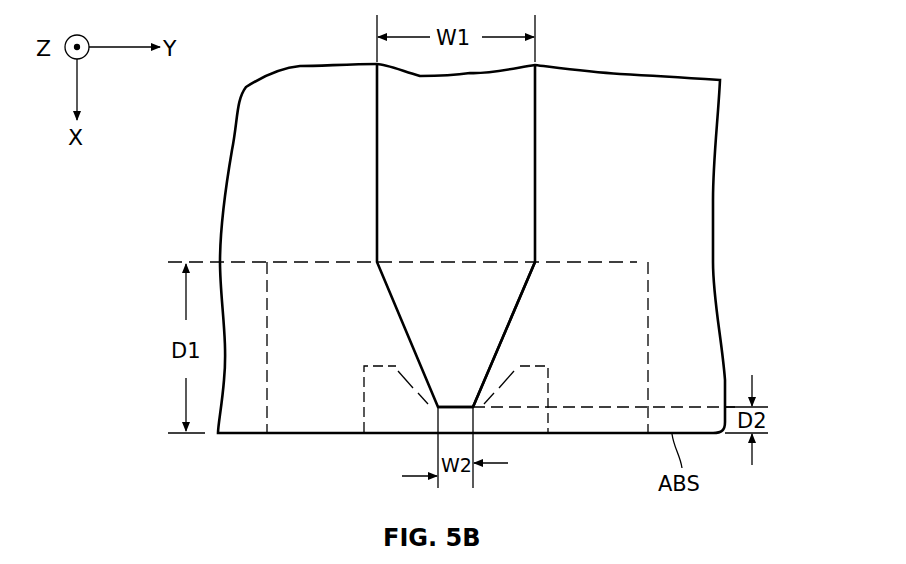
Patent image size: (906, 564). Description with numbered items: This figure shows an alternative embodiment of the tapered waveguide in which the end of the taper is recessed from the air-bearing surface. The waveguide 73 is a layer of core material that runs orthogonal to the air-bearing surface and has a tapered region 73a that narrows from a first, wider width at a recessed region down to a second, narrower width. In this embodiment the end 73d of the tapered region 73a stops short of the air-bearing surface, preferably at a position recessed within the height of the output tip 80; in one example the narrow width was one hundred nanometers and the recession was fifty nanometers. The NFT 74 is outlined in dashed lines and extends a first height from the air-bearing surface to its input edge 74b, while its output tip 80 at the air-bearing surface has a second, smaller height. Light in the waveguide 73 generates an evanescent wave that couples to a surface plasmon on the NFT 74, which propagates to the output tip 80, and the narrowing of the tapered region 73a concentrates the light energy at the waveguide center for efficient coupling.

The waveguide 73 is at (515, 173).
The tapered region 73a is at (500, 315).
The end of the waveguide 73d is at (457, 405).
The NFT 74 is at (630, 308).
The input edge 74b is at (637, 260).
The output tip 80 is at (450, 423).